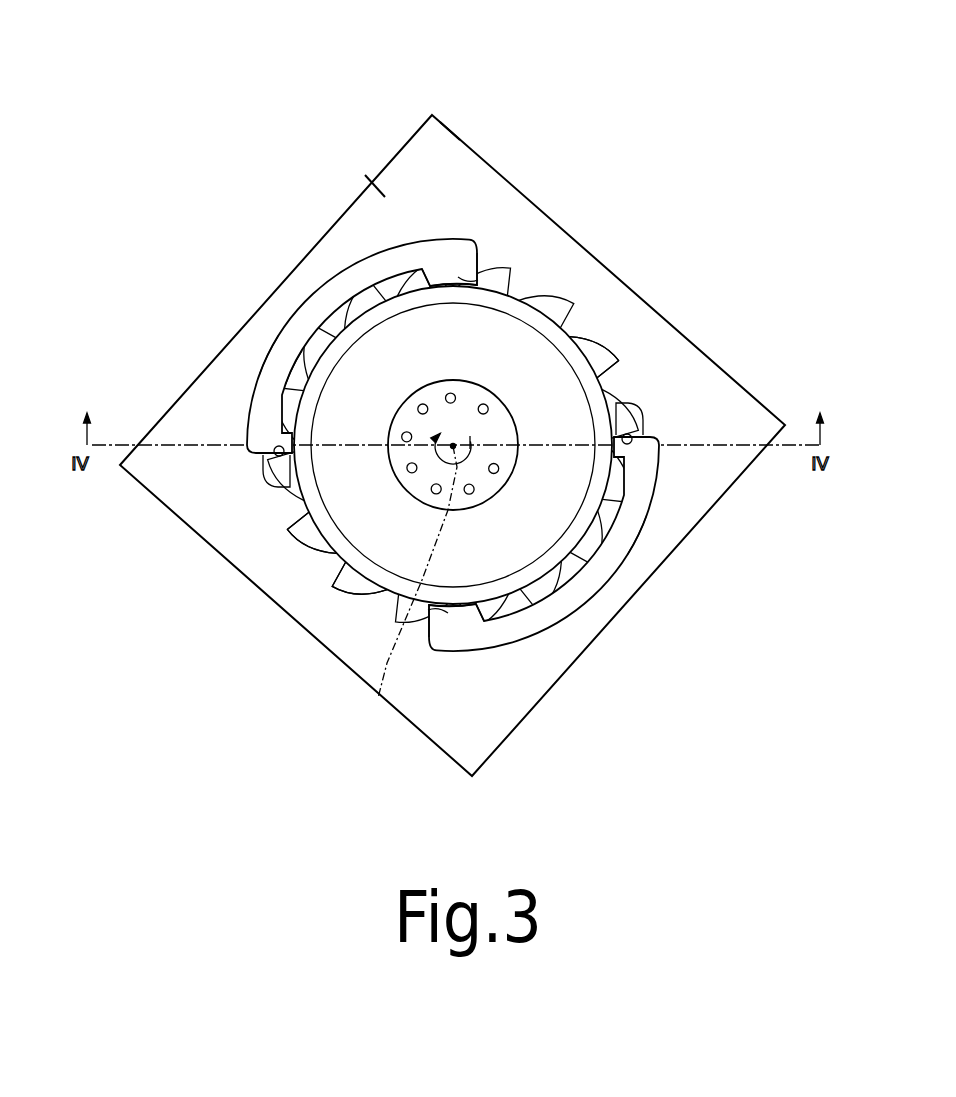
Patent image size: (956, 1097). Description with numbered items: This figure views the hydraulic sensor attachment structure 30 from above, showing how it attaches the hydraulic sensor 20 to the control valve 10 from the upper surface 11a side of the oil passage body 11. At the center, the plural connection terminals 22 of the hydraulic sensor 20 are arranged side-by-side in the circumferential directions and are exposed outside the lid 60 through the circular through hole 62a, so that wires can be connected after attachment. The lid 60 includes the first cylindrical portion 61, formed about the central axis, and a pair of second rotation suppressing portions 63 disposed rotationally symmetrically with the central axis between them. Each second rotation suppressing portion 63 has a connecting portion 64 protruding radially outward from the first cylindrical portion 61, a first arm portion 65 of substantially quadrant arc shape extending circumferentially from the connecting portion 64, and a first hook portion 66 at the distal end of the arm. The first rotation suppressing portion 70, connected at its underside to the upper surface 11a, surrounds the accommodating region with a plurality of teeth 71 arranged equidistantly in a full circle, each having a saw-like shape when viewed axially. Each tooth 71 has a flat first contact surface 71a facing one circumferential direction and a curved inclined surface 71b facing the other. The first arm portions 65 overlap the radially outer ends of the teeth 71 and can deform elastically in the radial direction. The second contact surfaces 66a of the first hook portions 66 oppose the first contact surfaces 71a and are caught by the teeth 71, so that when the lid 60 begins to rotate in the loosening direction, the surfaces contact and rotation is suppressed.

The control valve 10 is at (449, 111).
The oil passage body 11 is at (378, 190).
The upper surface 11a is at (441, 153).
The hydraulic sensor attachment structure 30 is at (508, 383).
The hydraulic sensor 20 is at (445, 605).
The connection terminals 22 is at (483, 405).
The lid 60 is at (502, 409).
The first cylindrical portion 61 is at (543, 520).
The through hole 62a is at (283, 362).
The first rotation suppressing portion 70 is at (455, 401).
The teeth 71 is at (334, 582).
The first contact surface 71a is at (627, 408).
The inclined surface 71b is at (598, 340).
The second rotation suppressing portions 63 is at (453, 418).
The connecting portion 64 is at (478, 263).
The first arm portion 65 is at (300, 300).
The first hook portion 66 is at (258, 427).
The second contact surface 66a is at (636, 419).